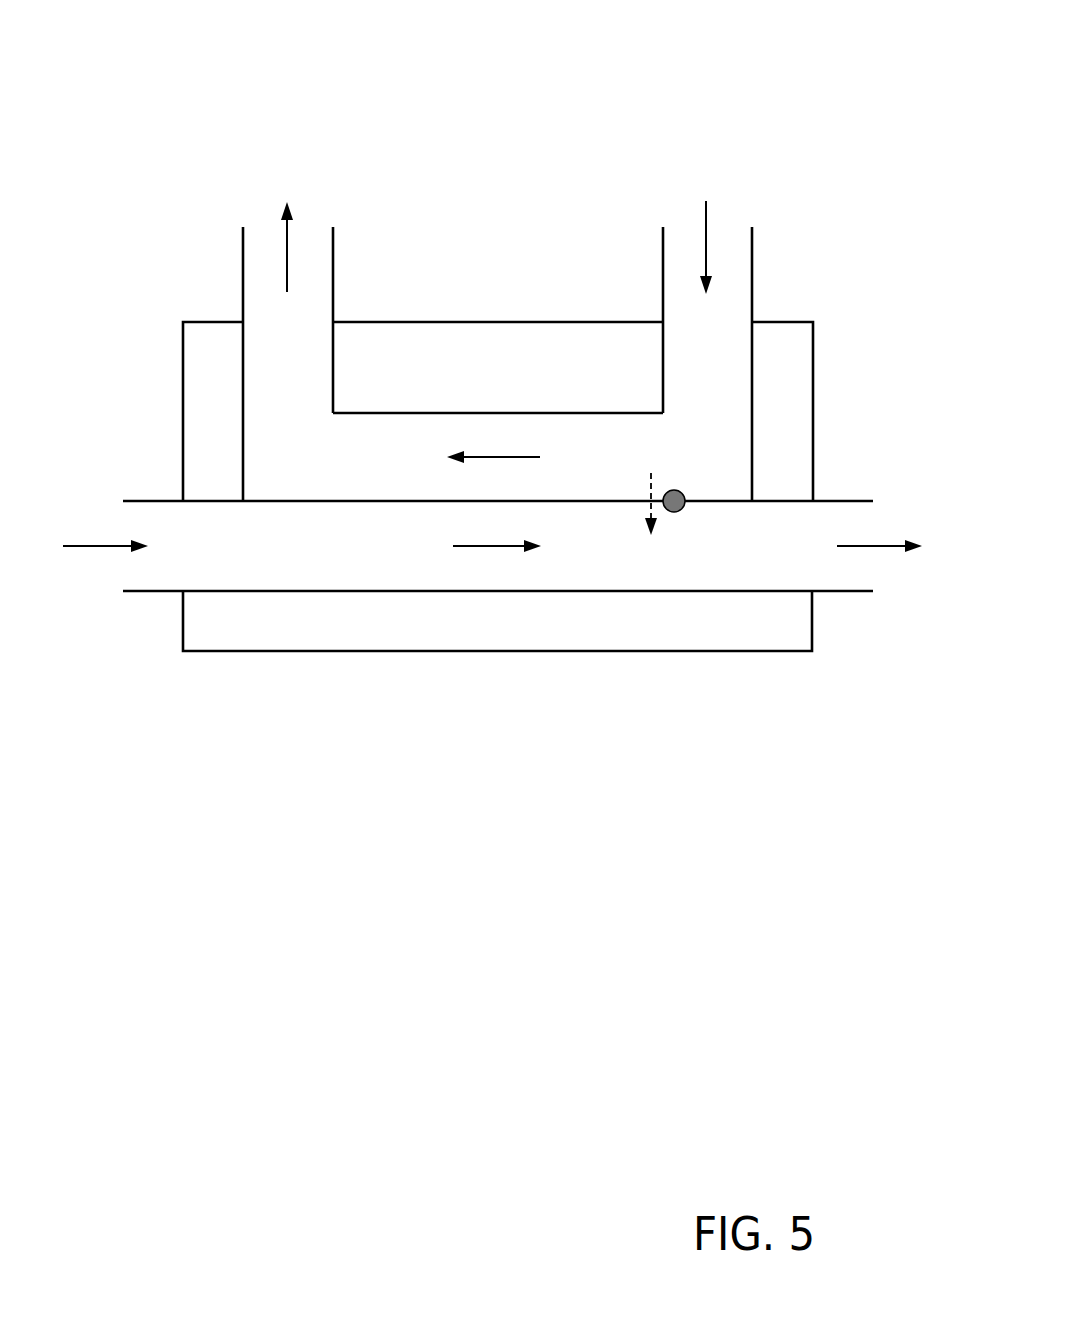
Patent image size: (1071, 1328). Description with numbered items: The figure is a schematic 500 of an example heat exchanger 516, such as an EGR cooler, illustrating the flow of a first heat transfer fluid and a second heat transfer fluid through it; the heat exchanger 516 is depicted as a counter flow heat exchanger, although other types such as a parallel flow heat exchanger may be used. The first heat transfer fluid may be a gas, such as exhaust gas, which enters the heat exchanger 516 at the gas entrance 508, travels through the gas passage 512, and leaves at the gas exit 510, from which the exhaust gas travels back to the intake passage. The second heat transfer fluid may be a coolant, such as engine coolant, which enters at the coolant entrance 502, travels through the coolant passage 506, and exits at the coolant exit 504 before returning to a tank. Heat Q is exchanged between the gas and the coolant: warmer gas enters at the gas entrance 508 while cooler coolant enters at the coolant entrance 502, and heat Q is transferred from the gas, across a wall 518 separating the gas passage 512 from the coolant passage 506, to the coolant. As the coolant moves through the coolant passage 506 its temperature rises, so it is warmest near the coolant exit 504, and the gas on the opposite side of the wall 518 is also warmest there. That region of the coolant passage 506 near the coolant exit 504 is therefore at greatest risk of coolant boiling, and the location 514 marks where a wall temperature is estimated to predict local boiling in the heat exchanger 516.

The schematic 500 is at (760, 50).
The coolant entrance 502 is at (80, 546).
The coolant exit 504 is at (895, 549).
The coolant passage 506 is at (160, 594).
The gas entrance 508 is at (706, 218).
The gas exit 510 is at (287, 235).
The gas passage 512 is at (752, 268).
The location for estimating a wall temperature 514 is at (674, 513).
The heat exchanger 516 is at (267, 652).
The wall 518 is at (370, 505).
The heat Q is at (652, 493).